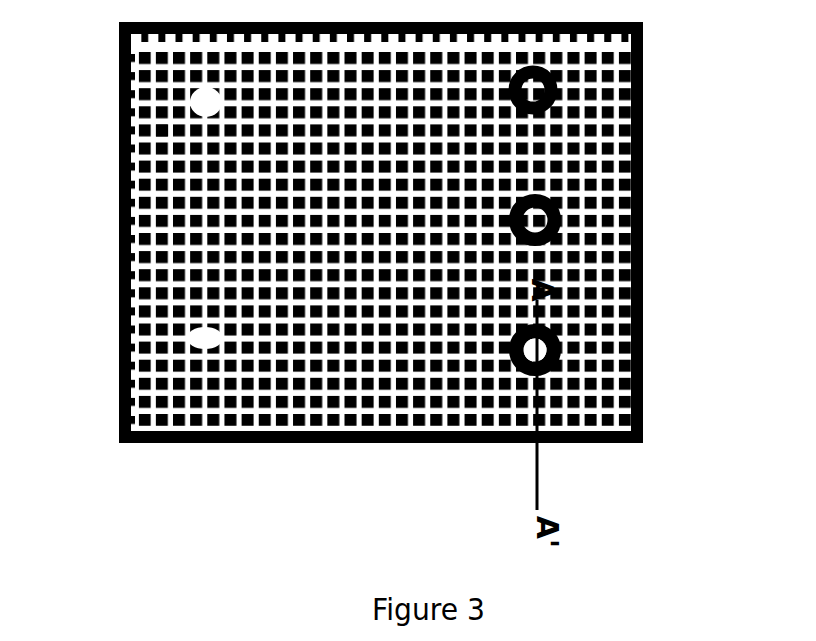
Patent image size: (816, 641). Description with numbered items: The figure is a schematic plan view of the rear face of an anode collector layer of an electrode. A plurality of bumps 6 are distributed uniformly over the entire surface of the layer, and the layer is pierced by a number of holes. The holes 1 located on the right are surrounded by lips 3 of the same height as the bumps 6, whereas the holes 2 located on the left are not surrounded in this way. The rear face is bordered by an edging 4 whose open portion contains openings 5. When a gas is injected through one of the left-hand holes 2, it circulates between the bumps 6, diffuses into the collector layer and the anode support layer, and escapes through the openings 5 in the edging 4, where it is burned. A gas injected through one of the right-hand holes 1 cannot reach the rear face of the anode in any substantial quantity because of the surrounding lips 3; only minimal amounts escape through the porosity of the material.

The holes 1 is at (563, 340).
The holes 2 is at (202, 229).
The lips 3 is at (562, 366).
The edging 4 is at (118, 361).
The openings 5 is at (638, 139).
The bumps 6 is at (163, 132).